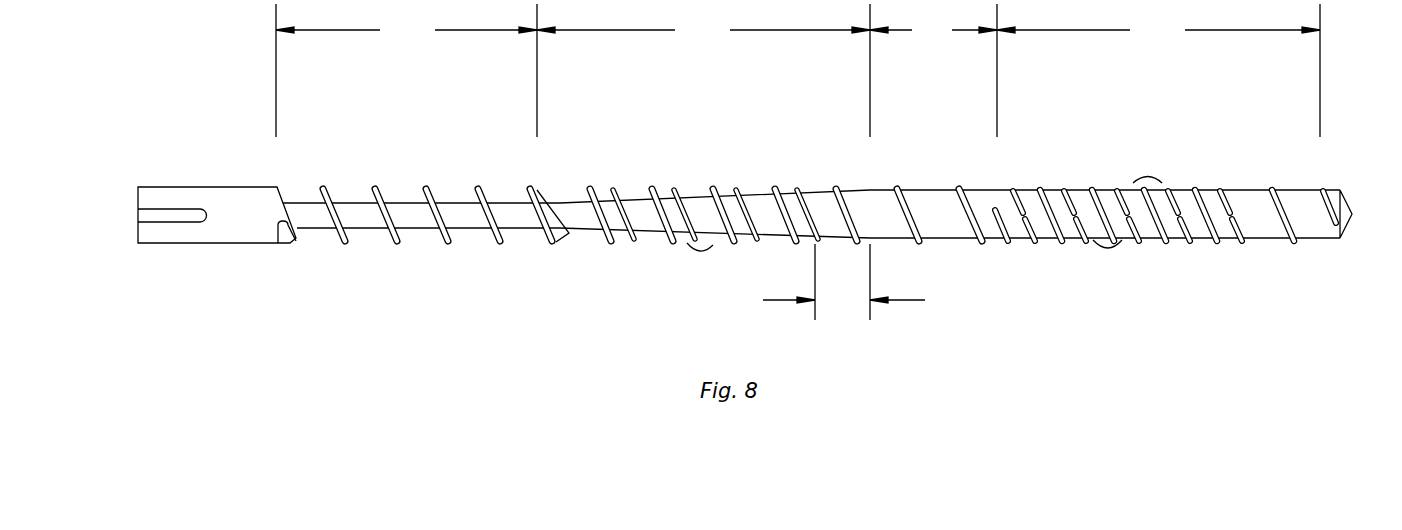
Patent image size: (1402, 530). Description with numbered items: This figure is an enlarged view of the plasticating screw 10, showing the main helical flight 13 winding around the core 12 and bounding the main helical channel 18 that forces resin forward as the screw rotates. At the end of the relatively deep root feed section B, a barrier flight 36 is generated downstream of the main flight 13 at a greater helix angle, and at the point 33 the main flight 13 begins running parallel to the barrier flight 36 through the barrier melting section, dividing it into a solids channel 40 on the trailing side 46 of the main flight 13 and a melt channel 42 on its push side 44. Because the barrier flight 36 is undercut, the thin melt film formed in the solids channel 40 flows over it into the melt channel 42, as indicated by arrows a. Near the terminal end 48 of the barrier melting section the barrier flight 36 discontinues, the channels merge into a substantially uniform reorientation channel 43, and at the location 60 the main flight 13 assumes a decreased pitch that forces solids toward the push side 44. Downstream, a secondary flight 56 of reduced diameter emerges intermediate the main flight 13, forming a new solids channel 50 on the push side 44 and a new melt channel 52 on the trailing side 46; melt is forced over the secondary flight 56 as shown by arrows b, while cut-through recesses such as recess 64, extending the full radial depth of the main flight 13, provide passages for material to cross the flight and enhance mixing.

The screw 10 is at (458, 165).
The core 12 is at (418, 188).
The main helical flight 13 is at (340, 238).
The main helical channel 18 is at (472, 238).
The point where main flight runs parallel to barrier flight 33 is at (573, 189).
The barrier flight 36 is at (628, 189).
The solids channel 40 is at (645, 240).
The melt channel 42 is at (617, 240).
The reorientation channel 43 is at (962, 241).
The push side 44 is at (686, 189).
The trailing side 46 is at (637, 189).
The terminal end of barrier melting section 48 is at (844, 282).
The new solids channel 50 is at (1023, 189).
The new melt channel 52 is at (1073, 240).
The secondary flight 56 is at (1190, 189).
The location of decreased pitch 60 is at (890, 242).
The cut-through recess 64 is at (1173, 241).
The arrows a is at (700, 260).
The arrows b is at (1127, 213).
The feed section B is at (798, 70).